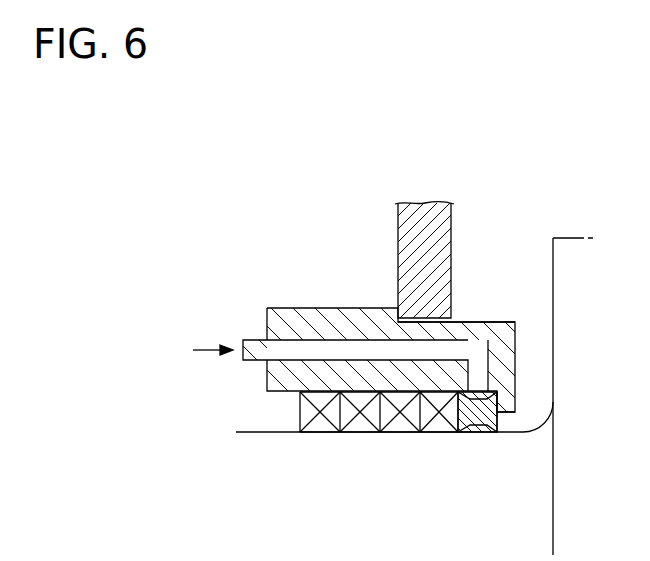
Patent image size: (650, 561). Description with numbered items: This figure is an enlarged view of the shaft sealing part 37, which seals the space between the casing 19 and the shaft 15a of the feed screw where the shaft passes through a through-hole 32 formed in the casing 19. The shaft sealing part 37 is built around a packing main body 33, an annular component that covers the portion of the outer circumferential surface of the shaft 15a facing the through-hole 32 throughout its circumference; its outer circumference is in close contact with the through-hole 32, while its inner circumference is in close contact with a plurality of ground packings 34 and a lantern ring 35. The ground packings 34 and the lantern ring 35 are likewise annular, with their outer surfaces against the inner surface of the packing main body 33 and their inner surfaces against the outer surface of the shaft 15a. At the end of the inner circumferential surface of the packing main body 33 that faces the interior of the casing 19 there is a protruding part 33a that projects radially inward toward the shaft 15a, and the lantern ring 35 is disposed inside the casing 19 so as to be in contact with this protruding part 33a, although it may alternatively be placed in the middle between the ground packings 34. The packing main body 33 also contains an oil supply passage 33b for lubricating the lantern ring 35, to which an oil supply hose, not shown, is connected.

The shaft 15a is at (265, 457).
The casing 19 is at (433, 226).
The through-hole 32 is at (455, 323).
The packing main body 33 is at (350, 308).
The protruding part 33a is at (507, 404).
The oil supply passage 33b is at (287, 345).
The ground packings 34 is at (322, 423).
The lantern ring 35 is at (473, 430).
The shaft sealing part 37 is at (288, 307).